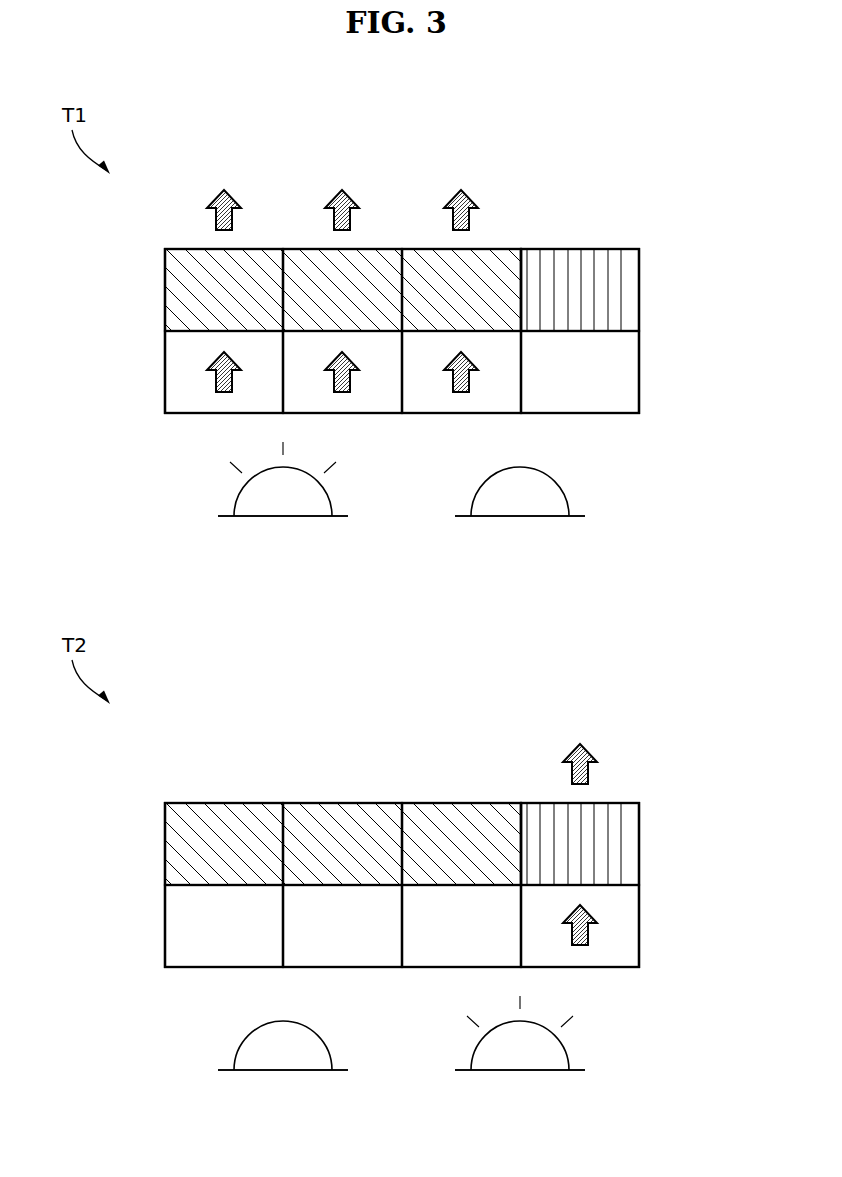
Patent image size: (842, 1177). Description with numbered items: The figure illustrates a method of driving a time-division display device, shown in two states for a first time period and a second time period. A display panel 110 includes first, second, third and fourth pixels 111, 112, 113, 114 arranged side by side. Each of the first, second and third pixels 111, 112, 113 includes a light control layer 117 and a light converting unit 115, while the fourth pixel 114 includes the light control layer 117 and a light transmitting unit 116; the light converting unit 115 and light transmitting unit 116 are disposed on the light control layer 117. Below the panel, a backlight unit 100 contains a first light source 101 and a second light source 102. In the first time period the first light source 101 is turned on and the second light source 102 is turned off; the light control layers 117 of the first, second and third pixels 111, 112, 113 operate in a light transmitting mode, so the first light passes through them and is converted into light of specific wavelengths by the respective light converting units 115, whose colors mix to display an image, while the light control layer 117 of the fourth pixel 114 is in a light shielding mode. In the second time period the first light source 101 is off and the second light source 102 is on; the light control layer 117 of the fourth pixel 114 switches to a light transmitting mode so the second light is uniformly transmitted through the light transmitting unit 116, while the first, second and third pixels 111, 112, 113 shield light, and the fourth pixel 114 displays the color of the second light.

The backlight unit 100 is at (476, 755).
The first light source 101 is at (283, 787).
The second light source 102 is at (520, 799).
The display panel 110 is at (449, 608).
The first pixel 111 is at (224, 547).
The second pixel 112 is at (342, 547).
The third pixel 113 is at (461, 547).
The fourth pixel 114 is at (580, 547).
The light converting unit 115 is at (180, 288).
The light transmitting unit 116 is at (573, 258).
The light control layer 117 is at (365, 649).